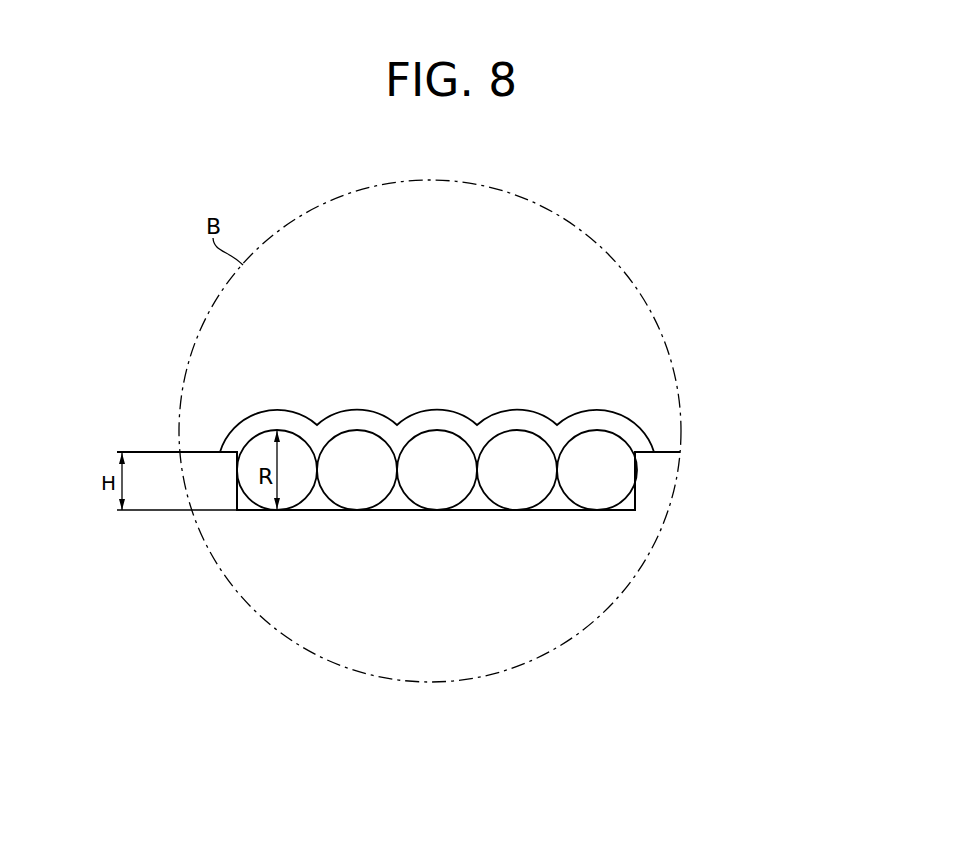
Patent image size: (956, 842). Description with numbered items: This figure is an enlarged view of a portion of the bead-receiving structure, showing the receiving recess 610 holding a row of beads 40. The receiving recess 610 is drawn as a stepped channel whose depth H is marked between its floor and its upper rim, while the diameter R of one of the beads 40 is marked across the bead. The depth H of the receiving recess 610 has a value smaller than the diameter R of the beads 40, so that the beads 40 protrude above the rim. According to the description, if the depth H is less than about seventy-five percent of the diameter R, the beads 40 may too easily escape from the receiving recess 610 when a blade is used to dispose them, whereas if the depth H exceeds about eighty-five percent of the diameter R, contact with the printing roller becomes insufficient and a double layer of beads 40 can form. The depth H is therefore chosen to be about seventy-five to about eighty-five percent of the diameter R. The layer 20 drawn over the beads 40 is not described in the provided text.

The coating layer 20 is at (392, 433).
The beads 40 is at (443, 493).
The receiving recess 610 is at (637, 500).